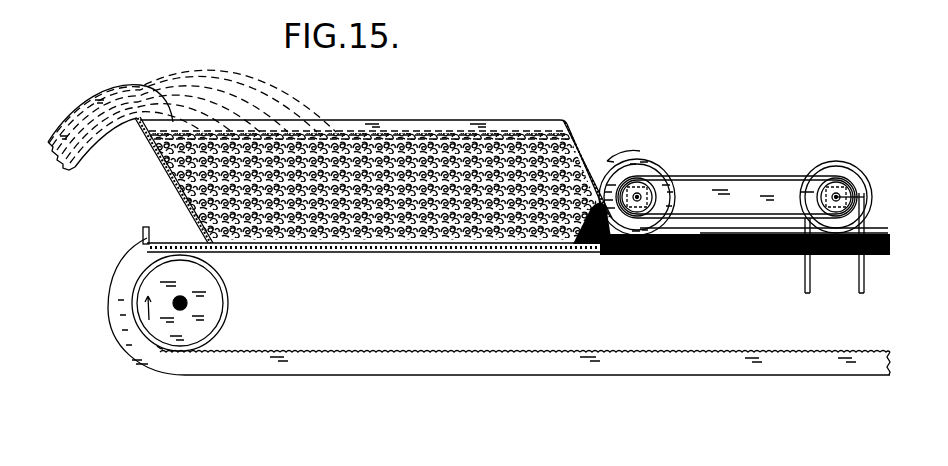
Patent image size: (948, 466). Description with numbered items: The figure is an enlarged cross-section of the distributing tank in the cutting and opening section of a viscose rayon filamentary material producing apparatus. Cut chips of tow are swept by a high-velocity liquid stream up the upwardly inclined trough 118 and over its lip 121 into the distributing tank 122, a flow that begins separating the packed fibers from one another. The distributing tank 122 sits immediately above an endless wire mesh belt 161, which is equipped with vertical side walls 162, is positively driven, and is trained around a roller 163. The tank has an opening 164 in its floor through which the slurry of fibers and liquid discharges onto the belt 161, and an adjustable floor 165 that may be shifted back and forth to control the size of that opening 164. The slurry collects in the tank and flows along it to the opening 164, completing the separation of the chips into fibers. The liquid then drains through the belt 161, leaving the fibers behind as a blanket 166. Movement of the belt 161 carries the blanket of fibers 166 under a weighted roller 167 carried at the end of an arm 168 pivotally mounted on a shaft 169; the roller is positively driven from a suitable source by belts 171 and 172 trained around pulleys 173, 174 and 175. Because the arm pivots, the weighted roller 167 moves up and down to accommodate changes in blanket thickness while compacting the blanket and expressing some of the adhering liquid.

The upwardly inclined trough 118 is at (80, 163).
The lip 121 is at (152, 135).
The distributing tank 122 is at (182, 190).
The endless wire mesh belt 161 is at (507, 254).
The vertical side walls 162 is at (520, 371).
The roller 163 is at (215, 304).
The opening 164 is at (578, 209).
The adjustable floor 165 is at (412, 253).
The blanket of fibers 166 is at (613, 251).
The weighted roller 167 is at (655, 163).
The arm 168 is at (752, 181).
The shaft 169 is at (856, 181).
The belt 171 is at (806, 285).
The belt 172 is at (730, 175).
The pulley 173 is at (834, 171).
The pulley 174 is at (857, 197).
The pulley 175 is at (663, 182).